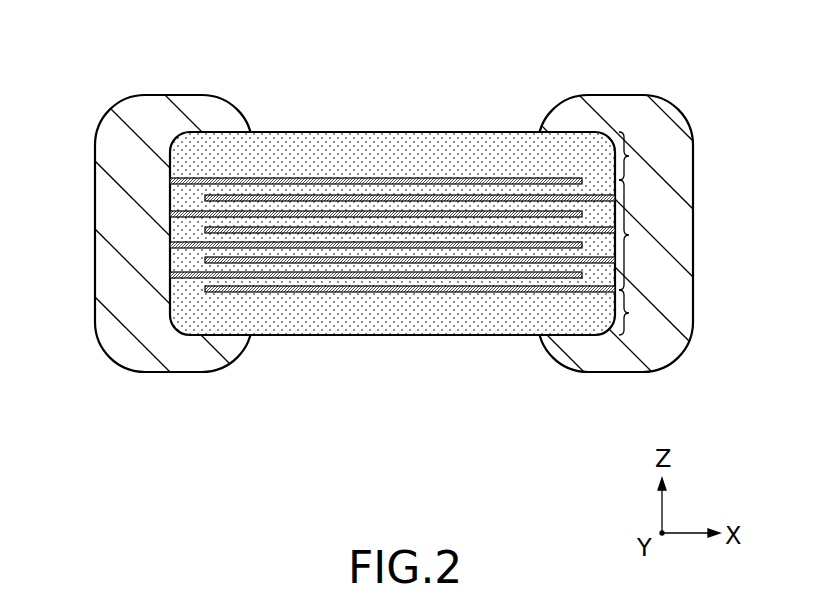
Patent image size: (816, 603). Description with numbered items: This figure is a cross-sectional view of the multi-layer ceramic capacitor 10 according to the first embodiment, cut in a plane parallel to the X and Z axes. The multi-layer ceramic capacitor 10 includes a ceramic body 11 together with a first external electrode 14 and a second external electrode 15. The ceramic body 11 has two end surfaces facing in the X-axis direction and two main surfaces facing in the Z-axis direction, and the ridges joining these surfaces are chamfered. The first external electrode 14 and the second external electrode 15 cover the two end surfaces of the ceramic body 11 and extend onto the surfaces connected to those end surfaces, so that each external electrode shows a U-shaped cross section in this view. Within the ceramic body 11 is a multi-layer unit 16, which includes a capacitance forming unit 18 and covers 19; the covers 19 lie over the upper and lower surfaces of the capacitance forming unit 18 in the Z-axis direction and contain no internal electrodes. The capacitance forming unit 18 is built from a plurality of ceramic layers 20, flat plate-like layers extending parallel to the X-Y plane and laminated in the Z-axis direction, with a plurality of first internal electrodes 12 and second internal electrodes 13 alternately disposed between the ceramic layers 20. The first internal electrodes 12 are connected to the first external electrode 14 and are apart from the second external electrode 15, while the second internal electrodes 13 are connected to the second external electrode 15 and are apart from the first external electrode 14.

The multi-layer ceramic capacitor 10 is at (125, 70).
The ceramic body 11 is at (372, 76).
The first internal electrodes 12 is at (273, 275).
The second internal electrodes 13 is at (462, 289).
The first external electrode 14 is at (108, 234).
The second external electrode 15 is at (685, 232).
The multi-layer unit 16 is at (333, 320).
The capacitance forming unit 18 is at (641, 235).
The covers 19 is at (641, 233).
The ceramic layers 20 is at (375, 238).